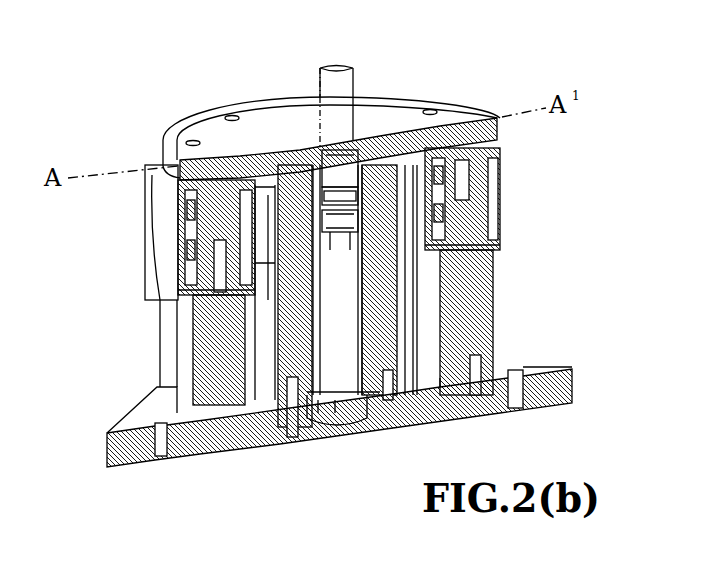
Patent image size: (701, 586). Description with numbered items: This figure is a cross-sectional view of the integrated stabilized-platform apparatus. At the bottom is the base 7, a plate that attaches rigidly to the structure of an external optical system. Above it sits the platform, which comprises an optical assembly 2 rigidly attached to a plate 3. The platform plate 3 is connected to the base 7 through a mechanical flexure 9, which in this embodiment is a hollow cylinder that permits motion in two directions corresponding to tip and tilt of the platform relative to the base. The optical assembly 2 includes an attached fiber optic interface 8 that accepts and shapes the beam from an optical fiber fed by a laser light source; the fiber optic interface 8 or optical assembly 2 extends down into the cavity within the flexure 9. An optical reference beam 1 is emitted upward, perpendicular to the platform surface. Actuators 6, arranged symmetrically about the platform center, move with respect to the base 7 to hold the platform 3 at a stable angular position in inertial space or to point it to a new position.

The optical reference beam 1 is at (320, 78).
The optical assembly 2 is at (217, 120).
The plate 3 is at (172, 137).
The actuators 6 is at (190, 230).
The base 7 is at (193, 452).
The fiber optic interface 8 is at (337, 400).
The mechanical flexure 9 is at (440, 328).